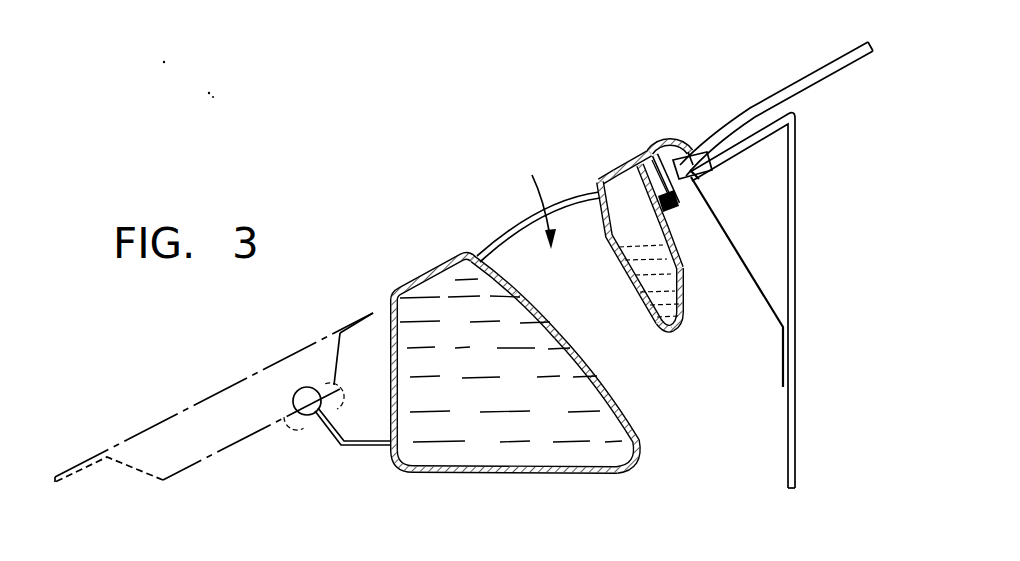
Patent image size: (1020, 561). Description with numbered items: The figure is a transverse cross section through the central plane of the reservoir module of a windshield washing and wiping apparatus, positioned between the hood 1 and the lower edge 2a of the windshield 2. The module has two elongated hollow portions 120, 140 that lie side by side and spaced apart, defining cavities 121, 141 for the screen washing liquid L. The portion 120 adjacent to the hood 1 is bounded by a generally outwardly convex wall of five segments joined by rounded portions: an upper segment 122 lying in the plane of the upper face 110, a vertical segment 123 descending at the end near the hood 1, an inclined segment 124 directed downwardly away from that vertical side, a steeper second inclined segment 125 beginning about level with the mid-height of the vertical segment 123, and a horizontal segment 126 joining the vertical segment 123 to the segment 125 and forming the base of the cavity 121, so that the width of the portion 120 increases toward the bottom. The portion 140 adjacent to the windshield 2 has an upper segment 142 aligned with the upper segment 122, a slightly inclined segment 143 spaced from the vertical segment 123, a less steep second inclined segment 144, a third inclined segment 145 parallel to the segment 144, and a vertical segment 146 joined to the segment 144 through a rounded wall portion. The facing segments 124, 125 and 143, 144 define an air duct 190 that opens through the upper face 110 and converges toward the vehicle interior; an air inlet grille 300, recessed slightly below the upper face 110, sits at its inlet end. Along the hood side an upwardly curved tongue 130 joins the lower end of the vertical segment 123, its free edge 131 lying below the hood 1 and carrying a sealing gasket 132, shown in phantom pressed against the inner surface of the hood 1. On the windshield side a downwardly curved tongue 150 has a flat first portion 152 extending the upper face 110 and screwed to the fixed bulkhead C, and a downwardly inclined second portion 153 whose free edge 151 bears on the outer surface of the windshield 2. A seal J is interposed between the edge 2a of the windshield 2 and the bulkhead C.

The hood 1 is at (185, 427).
The windshield 2 is at (773, 111).
The lower edge of the windshield 2a is at (710, 162).
The bulkhead C is at (796, 225).
The seal J is at (704, 180).
The windshield washing liquid L is at (628, 242).
The upper face 110 is at (451, 259).
The elongated hollow portion 120 is at (505, 302).
The cavity 121 is at (545, 452).
The upper segment 122 is at (395, 289).
The vertical segment 123 is at (386, 425).
The inclined segment 124 is at (564, 332).
The second inclined segment 125 is at (619, 399).
The horizontal segment 126 is at (458, 470).
The tongue 130 is at (309, 389).
The free edge of the tongue 131 is at (317, 393).
The sealing gasket 132 is at (300, 393).
The elongated hollow portion 140 is at (637, 239).
The cavity 141 is at (680, 322).
The upper segment 142 is at (631, 154).
The inclined segment 143 is at (605, 225).
The second inclined segment 144 is at (655, 327).
The third inclined segment 145 is at (682, 252).
The vertical segment 146 is at (685, 292).
The tongue 150 is at (686, 136).
The free edge of the tongue 151 is at (690, 150).
The first portion of the tongue 152 is at (648, 145).
The second portion of the tongue 153 is at (688, 131).
The air duct 190 is at (531, 195).
The air inlet grille 300 is at (517, 230).